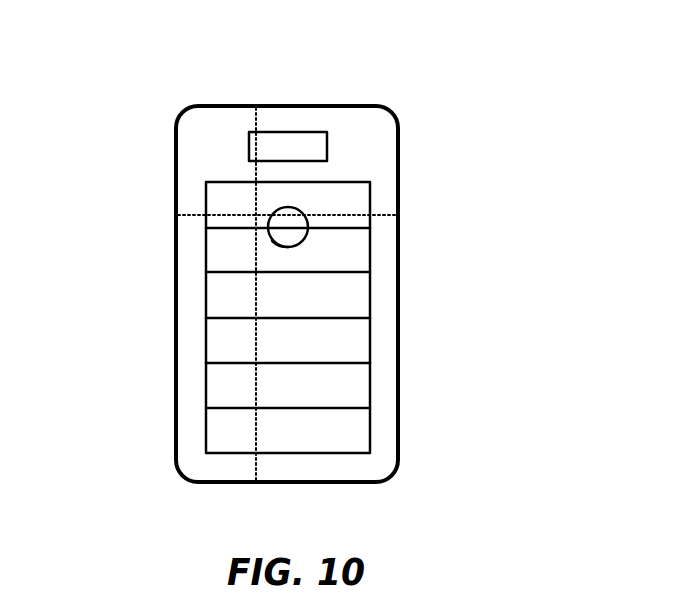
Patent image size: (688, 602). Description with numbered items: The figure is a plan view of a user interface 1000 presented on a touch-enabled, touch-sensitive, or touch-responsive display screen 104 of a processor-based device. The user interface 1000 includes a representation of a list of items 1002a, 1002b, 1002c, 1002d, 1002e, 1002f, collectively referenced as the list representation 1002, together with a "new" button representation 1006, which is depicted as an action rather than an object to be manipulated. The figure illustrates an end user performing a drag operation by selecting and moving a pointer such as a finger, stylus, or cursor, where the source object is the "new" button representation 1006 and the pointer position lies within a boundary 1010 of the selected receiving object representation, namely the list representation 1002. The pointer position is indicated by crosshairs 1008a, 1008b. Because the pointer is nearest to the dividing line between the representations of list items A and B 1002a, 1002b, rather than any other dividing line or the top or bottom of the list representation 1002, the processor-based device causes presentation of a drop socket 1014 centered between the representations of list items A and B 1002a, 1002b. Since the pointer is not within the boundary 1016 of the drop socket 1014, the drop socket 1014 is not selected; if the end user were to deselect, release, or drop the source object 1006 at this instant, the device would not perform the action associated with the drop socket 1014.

The user interface 1000 is at (197, 121).
The display screen 104 is at (398, 131).
The list representation 1002 is at (303, 182).
The list item A representation 1002a is at (357, 205).
The list item B representation 1002b is at (357, 250).
The list item C representation 1002c is at (348, 290).
The list item D representation 1002d is at (357, 348).
The list item E representation 1002e is at (350, 383).
The list item F representation 1002f is at (353, 425).
The "new" button representation 1006 is at (312, 132).
The crosshair 1008a is at (255, 122).
The crosshair 1008b is at (185, 214).
The boundary 1010 is at (206, 225).
The drop socket 1014 is at (303, 213).
The boundary 1016 is at (280, 242).